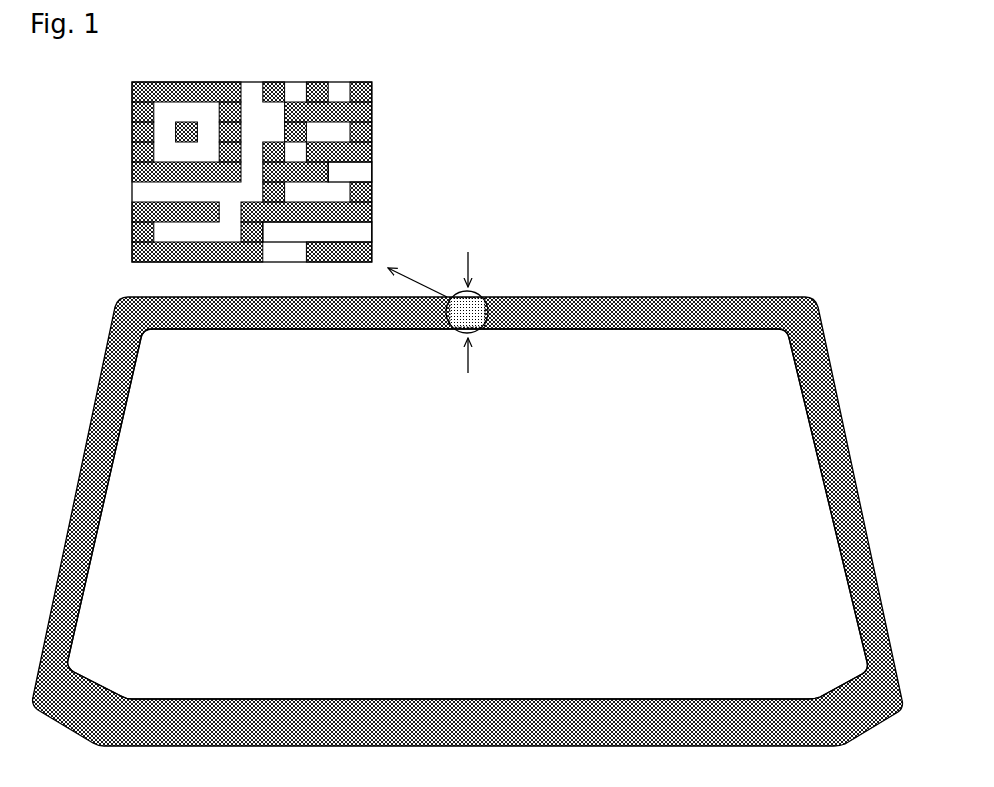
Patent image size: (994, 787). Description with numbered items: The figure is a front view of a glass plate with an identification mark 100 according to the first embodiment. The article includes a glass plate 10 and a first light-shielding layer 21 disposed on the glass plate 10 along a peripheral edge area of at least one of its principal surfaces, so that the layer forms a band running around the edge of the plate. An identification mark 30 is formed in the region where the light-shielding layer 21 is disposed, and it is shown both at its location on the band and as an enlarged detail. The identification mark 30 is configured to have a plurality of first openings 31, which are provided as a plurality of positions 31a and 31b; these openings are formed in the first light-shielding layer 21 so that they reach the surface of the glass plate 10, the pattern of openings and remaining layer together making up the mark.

The glass plate with an identification mark 100 is at (888, 229).
The glass plate 10 is at (181, 366).
The first light-shielding layer 21 is at (757, 308).
The identification mark 30 is at (372, 80).
The first openings 31 is at (421, 140).
The position of first opening 31a is at (340, 238).
The position of first opening 31b is at (347, 176).